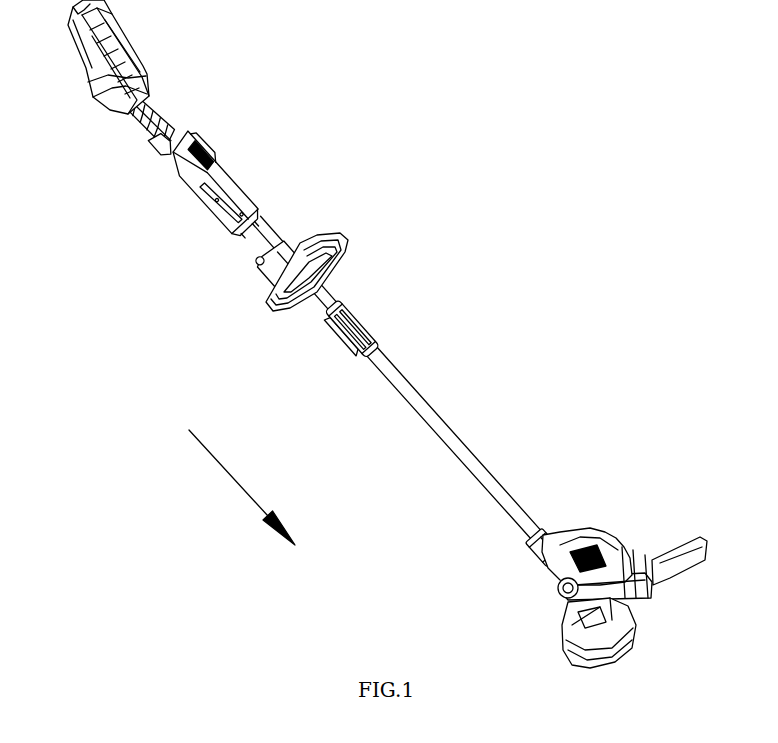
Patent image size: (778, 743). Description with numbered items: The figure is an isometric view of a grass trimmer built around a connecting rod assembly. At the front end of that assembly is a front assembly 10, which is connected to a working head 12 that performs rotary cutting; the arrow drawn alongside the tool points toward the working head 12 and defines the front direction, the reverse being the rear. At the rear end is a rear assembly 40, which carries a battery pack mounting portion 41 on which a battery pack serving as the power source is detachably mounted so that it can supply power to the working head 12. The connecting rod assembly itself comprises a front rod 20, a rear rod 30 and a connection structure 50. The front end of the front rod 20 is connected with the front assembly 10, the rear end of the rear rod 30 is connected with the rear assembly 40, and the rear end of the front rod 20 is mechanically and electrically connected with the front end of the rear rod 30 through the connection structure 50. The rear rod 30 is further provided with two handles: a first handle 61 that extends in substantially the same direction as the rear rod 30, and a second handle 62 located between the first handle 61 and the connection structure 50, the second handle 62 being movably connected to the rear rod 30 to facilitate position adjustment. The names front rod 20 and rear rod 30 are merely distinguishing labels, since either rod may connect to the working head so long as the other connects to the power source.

The front assembly 10 is at (633, 582).
The working head 12 is at (687, 583).
The front rod 20 is at (457, 433).
The rear rod 30 is at (263, 233).
The rear assembly 40 is at (150, 121).
The battery pack mounting portion 41 is at (83, 75).
The connection structure 50 is at (367, 320).
The first handle 61 is at (181, 148).
The second handle 62 is at (348, 243).